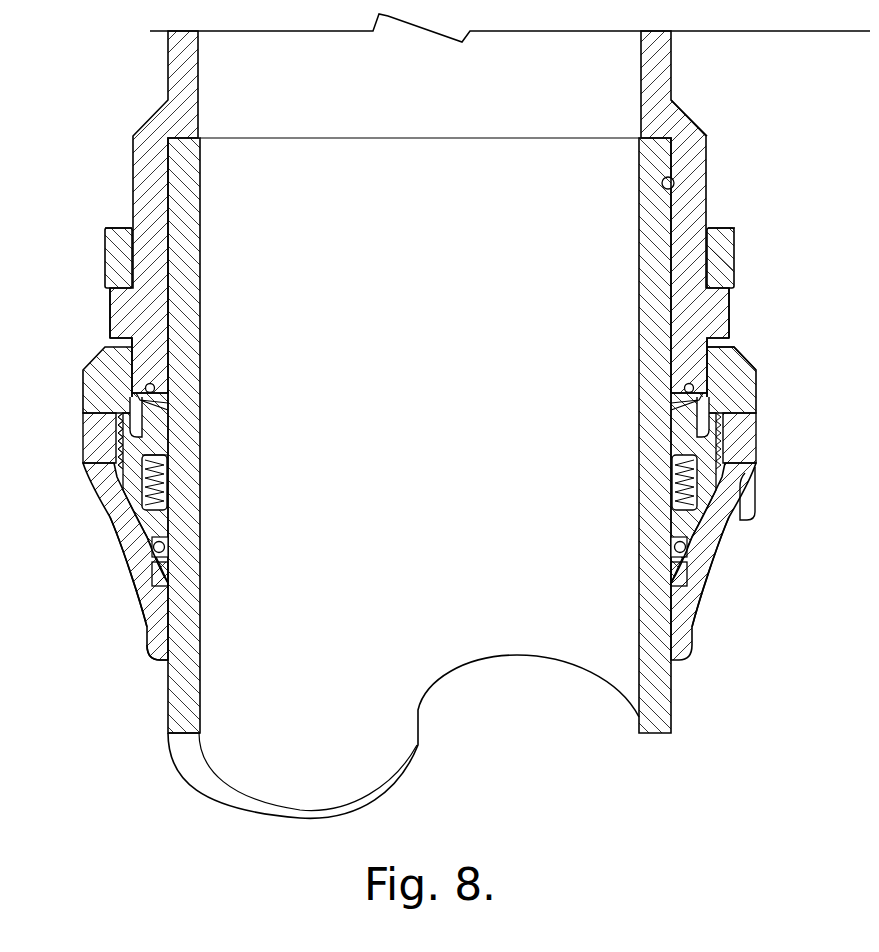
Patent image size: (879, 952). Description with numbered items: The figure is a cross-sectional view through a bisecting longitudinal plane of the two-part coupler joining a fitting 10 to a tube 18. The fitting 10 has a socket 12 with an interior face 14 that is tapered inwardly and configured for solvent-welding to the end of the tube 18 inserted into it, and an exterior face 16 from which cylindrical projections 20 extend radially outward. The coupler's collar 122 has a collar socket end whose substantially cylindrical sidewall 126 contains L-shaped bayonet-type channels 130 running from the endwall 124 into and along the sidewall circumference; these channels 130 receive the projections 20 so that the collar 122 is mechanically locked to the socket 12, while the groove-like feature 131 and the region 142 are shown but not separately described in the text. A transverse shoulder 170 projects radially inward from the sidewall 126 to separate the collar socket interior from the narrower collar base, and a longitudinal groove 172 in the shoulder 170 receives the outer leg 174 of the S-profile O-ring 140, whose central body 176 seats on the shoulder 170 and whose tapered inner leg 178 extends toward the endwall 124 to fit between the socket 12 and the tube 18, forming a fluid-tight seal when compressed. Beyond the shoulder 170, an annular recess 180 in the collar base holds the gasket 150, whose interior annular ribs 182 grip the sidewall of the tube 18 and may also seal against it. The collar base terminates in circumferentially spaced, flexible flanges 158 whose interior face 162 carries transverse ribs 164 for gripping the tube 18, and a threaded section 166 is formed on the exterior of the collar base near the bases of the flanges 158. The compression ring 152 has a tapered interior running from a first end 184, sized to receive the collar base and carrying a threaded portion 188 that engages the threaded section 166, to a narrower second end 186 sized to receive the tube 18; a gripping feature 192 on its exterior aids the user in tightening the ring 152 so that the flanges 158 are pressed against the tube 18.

The fitting 10 is at (665, 55).
The socket 12 is at (707, 190).
The interior face 14 is at (674, 183).
The exterior face 16 is at (708, 145).
The tube 18 is at (673, 712).
The projections 20 is at (110, 300).
The collar 122 is at (92, 360).
The endwall 124 is at (722, 228).
The sidewall 126 is at (105, 250).
The channels 130 is at (112, 336).
The groove 131 is at (115, 228).
The O-ring 140 is at (165, 388).
The segment body 142 is at (722, 255).
The gasket 150 is at (110, 540).
The compression ring 152 is at (120, 553).
The flanges 158 is at (165, 575).
The interior face 162 is at (165, 715).
The transverse ribs 164 is at (163, 547).
The threaded section 166 is at (105, 485).
The shoulder 170 is at (170, 395).
The groove 172 is at (150, 420).
The outer leg 174 is at (705, 425).
The central body 176 is at (700, 372).
The inner leg 178 is at (672, 380).
The annular recess 180 is at (157, 497).
The annular ribs 182 is at (162, 480).
The first end 184 is at (90, 413).
The second end 186 is at (152, 660).
The threaded portion 188 is at (106, 486).
The gripping feature 192 is at (757, 505).